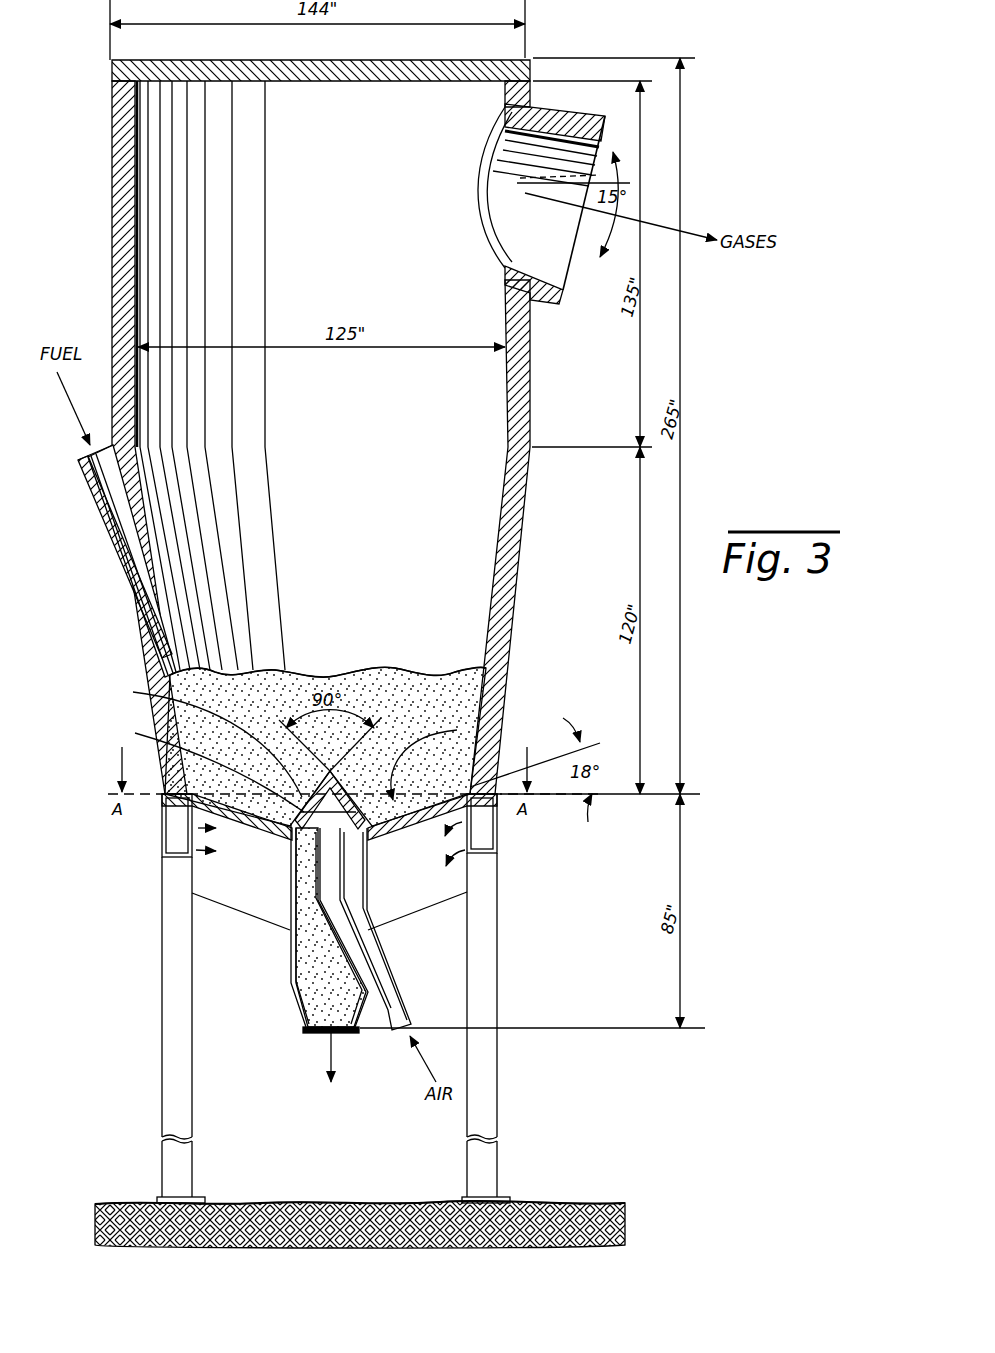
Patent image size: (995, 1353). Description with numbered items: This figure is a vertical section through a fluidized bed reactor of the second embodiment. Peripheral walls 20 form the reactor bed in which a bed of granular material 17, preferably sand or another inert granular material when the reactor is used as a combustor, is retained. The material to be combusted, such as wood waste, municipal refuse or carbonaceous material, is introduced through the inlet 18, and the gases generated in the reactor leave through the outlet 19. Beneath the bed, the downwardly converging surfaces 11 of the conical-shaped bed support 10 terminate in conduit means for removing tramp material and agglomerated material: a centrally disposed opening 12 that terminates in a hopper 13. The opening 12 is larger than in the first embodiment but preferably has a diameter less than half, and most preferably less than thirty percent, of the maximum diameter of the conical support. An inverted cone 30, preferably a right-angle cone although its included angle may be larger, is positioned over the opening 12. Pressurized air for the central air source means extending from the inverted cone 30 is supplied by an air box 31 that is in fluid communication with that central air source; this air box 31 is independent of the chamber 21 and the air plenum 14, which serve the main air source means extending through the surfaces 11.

The bed support 10 is at (440, 740).
The downwardly converging surfaces 11 is at (388, 838).
The centrally disposed opening 12 is at (290, 862).
The hopper 13 is at (367, 898).
The air plenum 14 is at (162, 838).
The bed of granular material 17 is at (447, 690).
The inlet 18 is at (100, 472).
The outlet 19 is at (585, 152).
The peripheral walls 20 is at (150, 502).
The chamber 21 is at (243, 903).
The inverted cone 30 is at (206, 738).
The air box 31 is at (208, 766).